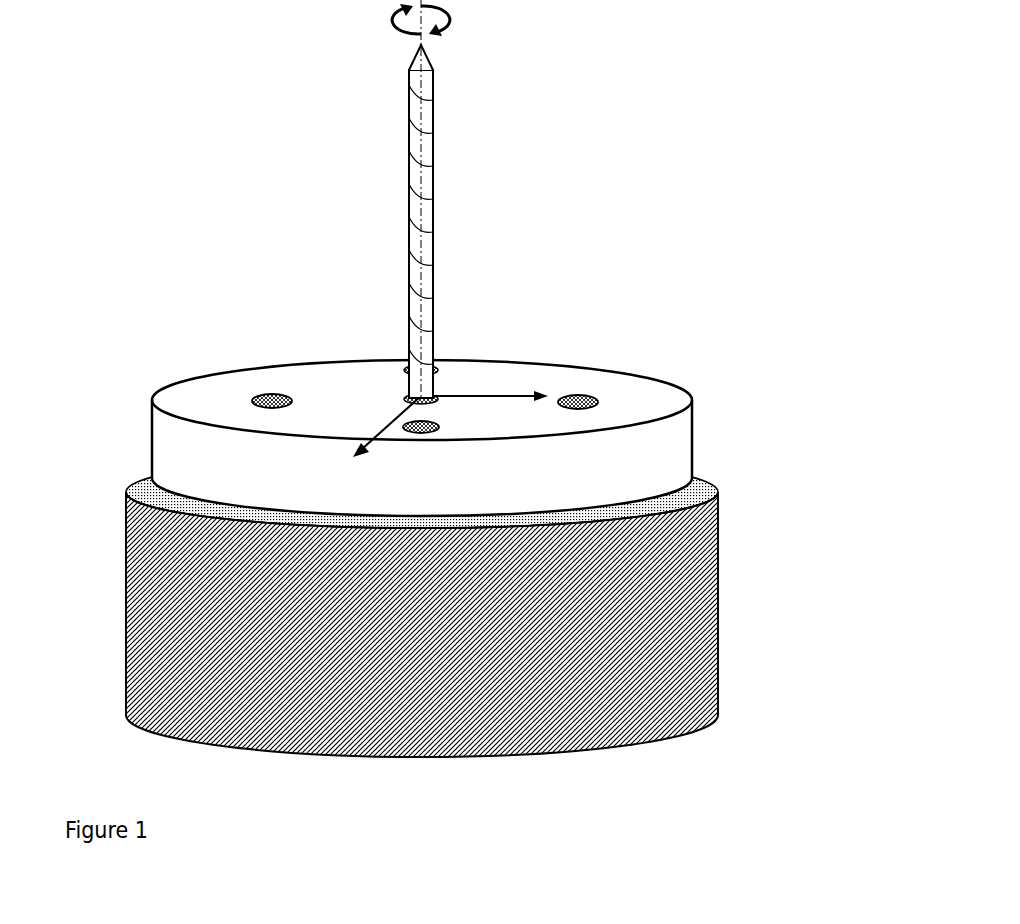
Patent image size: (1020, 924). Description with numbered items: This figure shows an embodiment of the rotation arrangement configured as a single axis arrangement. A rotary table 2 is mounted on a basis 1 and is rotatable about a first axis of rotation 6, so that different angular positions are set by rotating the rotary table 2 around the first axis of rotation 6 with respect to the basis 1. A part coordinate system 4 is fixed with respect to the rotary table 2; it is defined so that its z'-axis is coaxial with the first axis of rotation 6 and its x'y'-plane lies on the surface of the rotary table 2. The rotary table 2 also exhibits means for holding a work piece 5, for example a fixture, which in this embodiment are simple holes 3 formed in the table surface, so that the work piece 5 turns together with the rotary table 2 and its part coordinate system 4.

The basis 1 is at (718, 588).
The rotary table 2 is at (693, 432).
The holes 3 is at (586, 395).
The part coordinate system 4 is at (445, 394).
The work piece 5 is at (434, 198).
The first axis of rotation 6 is at (434, 128).